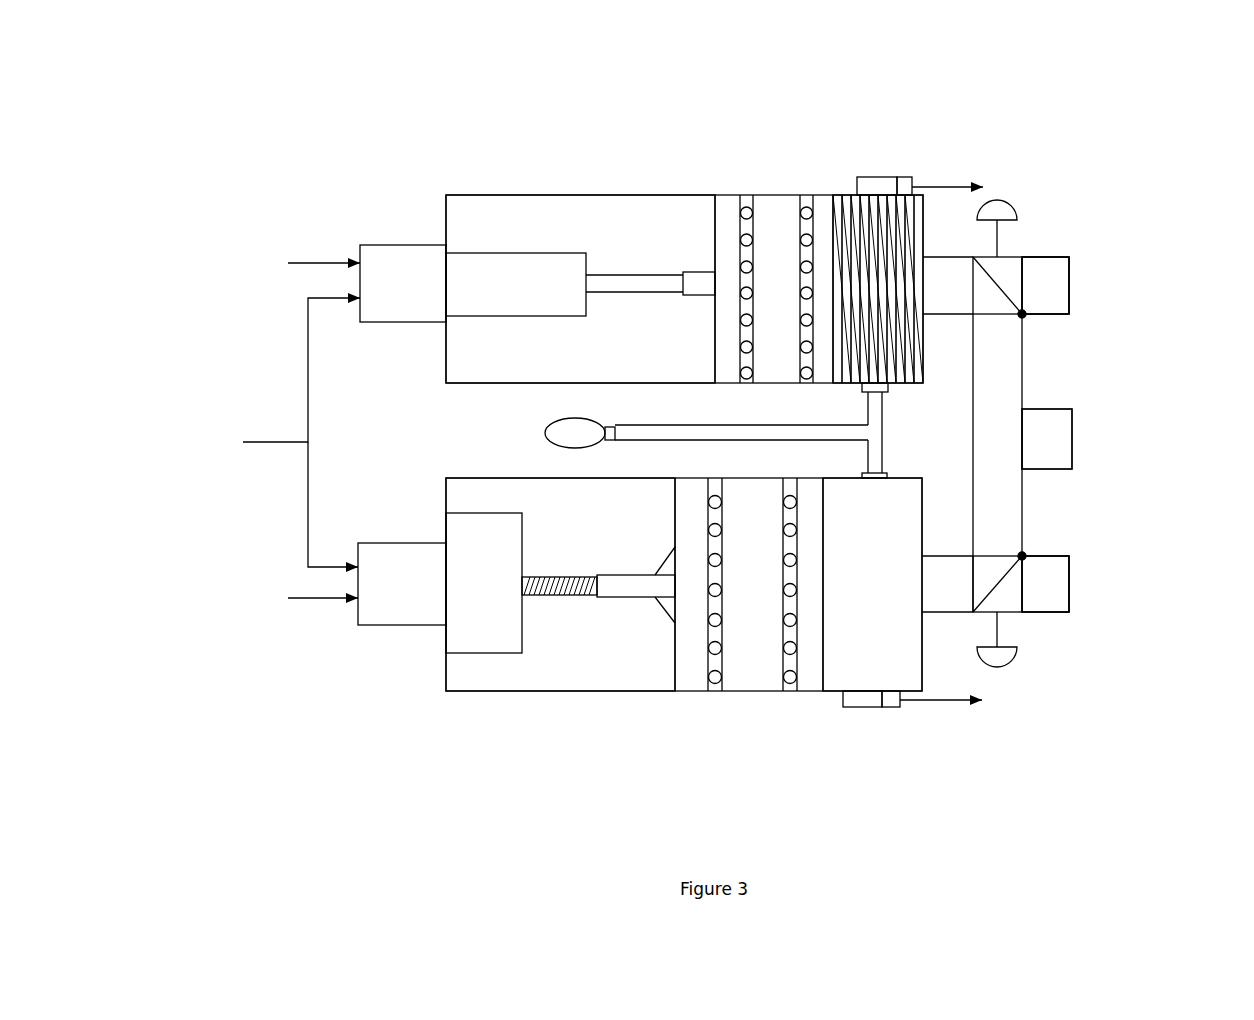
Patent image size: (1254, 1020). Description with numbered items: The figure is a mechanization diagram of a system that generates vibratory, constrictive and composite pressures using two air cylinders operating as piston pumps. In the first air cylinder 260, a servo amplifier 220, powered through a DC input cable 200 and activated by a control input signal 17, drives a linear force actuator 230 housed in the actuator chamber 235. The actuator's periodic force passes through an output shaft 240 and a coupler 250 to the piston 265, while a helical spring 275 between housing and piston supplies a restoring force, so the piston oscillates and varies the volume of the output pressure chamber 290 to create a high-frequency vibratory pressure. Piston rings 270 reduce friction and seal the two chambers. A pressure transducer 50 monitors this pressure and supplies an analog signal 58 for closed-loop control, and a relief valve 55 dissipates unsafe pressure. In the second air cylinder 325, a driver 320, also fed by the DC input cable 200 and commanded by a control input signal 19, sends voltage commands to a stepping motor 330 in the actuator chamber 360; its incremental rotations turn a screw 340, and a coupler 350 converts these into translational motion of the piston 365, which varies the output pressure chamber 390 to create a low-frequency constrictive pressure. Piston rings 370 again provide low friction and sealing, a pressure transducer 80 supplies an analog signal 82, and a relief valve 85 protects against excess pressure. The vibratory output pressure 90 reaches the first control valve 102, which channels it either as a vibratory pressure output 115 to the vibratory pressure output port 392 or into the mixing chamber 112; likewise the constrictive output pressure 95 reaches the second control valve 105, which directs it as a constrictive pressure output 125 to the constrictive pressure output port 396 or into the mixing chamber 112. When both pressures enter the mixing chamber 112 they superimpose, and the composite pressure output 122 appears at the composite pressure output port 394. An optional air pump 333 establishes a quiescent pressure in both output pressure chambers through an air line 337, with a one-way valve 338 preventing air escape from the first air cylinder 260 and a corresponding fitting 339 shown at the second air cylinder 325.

The analog drive signal 17 is at (312, 267).
The analog drive signal 19 is at (313, 600).
The DC input cable 200 is at (278, 445).
The servo amplifier 220 is at (425, 242).
The linear force actuator 230 is at (543, 252).
The actuator chamber 235 is at (473, 345).
The output shaft 240 is at (658, 285).
The coupler 250 is at (695, 280).
The air cylinder 1 260 is at (467, 193).
The piston 265 is at (733, 325).
The piston rings 270 is at (740, 227).
The helical spring 275 is at (850, 228).
The output pressure chamber 290 is at (850, 228).
The relief valve 1 55 is at (873, 177).
The pressure transducer 1 50 is at (903, 180).
The analog signal 58 is at (935, 185).
The one-way valve 338 is at (862, 392).
The output pressure 90 is at (946, 293).
The control valve 1 102 is at (1010, 268).
The vibratory pressure output 115 is at (1049, 298).
The vibratory pressure output port 392 is at (1070, 282).
The mixing chamber 112 is at (1012, 385).
The composite pressure output 122 is at (1040, 455).
The composite pressure output port 394 is at (1072, 440).
The output pressure 95 is at (950, 578).
The control valve 2 105 is at (1010, 600).
The constrictive pressure output 125 is at (1043, 570).
The constrictive pressure output port 396 is at (1070, 578).
The air pump 333 is at (587, 415).
The air line 337 is at (783, 440).
The air line fitting 339 is at (862, 472).
The driver 320 is at (402, 608).
The air cylinder 2 325 is at (497, 692).
The actuator chamber 360 is at (585, 678).
The stepping motor 330 is at (483, 522).
The screw 340 is at (573, 593).
The coupler 350 is at (633, 570).
The piston 365 is at (693, 670).
The piston rings 370 is at (782, 670).
The output pressure chamber 390 is at (882, 505).
The relief valve 2 85 is at (868, 695).
The pressure transducer 2 80 is at (888, 695).
The analog signal 82 is at (945, 702).